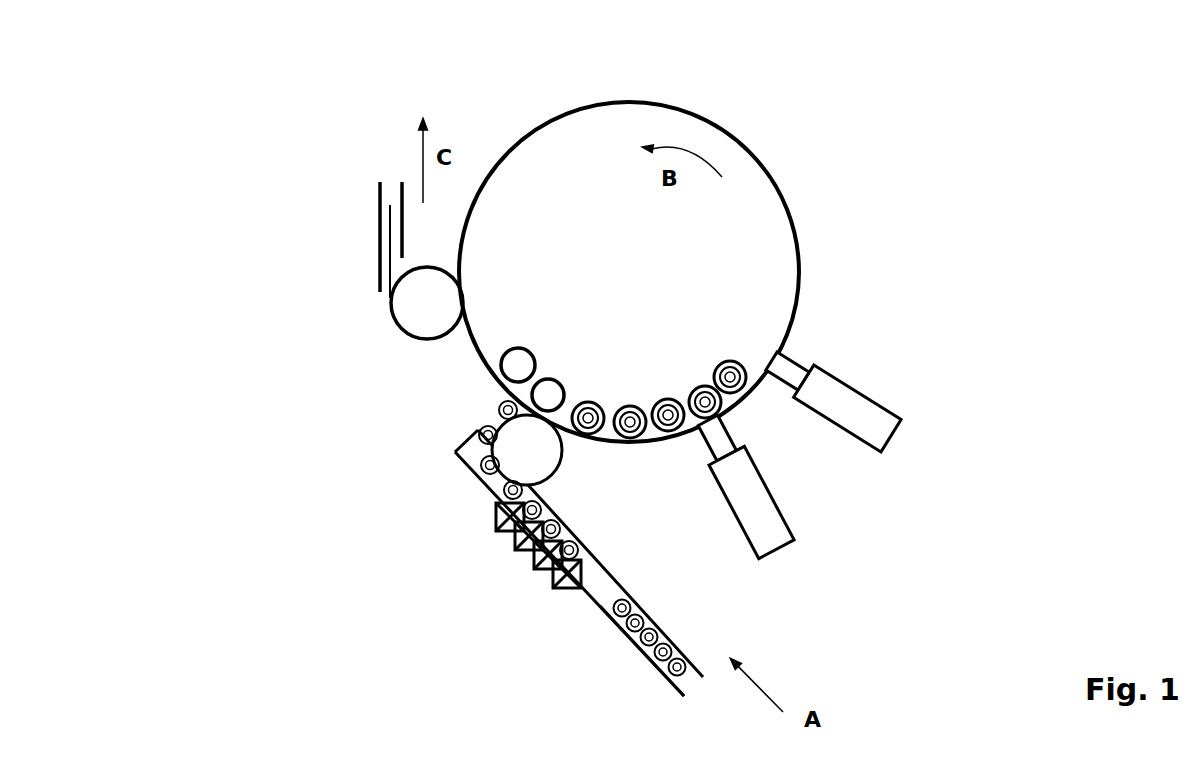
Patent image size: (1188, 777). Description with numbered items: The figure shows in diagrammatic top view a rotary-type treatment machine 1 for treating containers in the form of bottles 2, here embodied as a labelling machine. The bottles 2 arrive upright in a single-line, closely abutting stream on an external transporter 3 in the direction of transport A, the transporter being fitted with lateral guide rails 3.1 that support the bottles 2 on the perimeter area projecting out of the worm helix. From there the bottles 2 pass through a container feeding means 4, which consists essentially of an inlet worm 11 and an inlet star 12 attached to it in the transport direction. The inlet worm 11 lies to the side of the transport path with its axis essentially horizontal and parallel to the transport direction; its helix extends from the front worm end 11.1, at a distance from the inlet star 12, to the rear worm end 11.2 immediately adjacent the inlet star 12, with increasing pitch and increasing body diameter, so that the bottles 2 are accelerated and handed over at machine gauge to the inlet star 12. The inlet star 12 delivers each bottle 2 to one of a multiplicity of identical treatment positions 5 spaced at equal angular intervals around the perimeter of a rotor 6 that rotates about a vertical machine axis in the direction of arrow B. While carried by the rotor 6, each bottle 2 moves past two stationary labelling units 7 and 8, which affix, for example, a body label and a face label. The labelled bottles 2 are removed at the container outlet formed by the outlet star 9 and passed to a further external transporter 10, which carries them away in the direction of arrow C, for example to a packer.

The treatment machine 1 is at (325, 118).
The bottles 2 is at (660, 632).
The external transporter 3 is at (578, 633).
The lateral guide rails 3.1 is at (643, 656).
The container feeding means 4 is at (456, 490).
The treatment positions 5 is at (522, 357).
The rotor 6 is at (598, 158).
The labelling unit 7 is at (760, 500).
The labelling unit 8 is at (847, 402).
The outlet star 9 is at (412, 303).
The external transporter 10 is at (378, 237).
The inlet worm 11 is at (484, 572).
The worm end 11.1 is at (555, 590).
The worm end 11.2 is at (495, 529).
The inlet star 12 is at (522, 445).